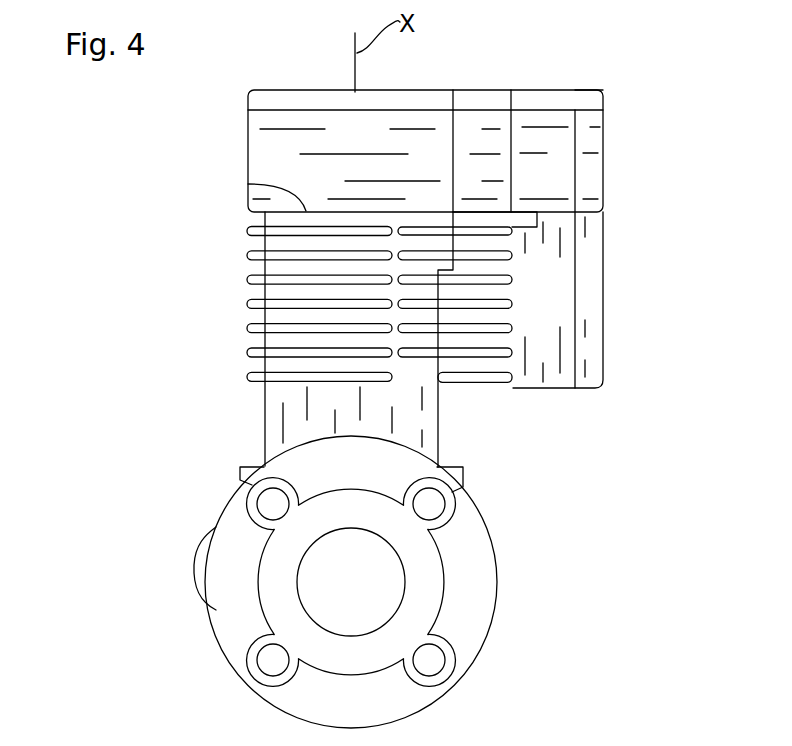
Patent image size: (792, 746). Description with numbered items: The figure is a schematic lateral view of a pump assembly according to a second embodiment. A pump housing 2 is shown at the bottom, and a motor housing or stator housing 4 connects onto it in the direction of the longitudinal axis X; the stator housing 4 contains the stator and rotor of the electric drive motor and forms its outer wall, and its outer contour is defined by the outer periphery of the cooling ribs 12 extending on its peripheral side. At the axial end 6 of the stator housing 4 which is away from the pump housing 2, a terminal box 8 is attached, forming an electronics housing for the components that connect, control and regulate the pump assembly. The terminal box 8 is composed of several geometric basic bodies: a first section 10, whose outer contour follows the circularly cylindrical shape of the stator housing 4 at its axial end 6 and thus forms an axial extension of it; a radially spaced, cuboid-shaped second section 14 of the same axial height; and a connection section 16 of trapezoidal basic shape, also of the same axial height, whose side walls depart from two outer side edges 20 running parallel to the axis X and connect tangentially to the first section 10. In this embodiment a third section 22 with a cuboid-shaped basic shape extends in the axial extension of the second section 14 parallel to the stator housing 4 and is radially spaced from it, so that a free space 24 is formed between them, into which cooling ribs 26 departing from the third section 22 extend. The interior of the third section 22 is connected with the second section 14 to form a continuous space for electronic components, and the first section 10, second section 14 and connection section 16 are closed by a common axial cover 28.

The pump housing 2 is at (493, 562).
The stator housing 4 is at (438, 450).
The axial end 6 is at (248, 184).
The terminal box 8 is at (636, 147).
The first section 10 is at (453, 88).
The cooling ribs 12 is at (246, 231).
The second section 14 is at (600, 86).
The connection section 16 is at (511, 86).
The outer side edges 20 is at (511, 163).
The third section 22 is at (676, 212).
The free space 24 is at (438, 385).
The cooling ribs 26 is at (507, 254).
The axial cover 28 is at (585, 103).